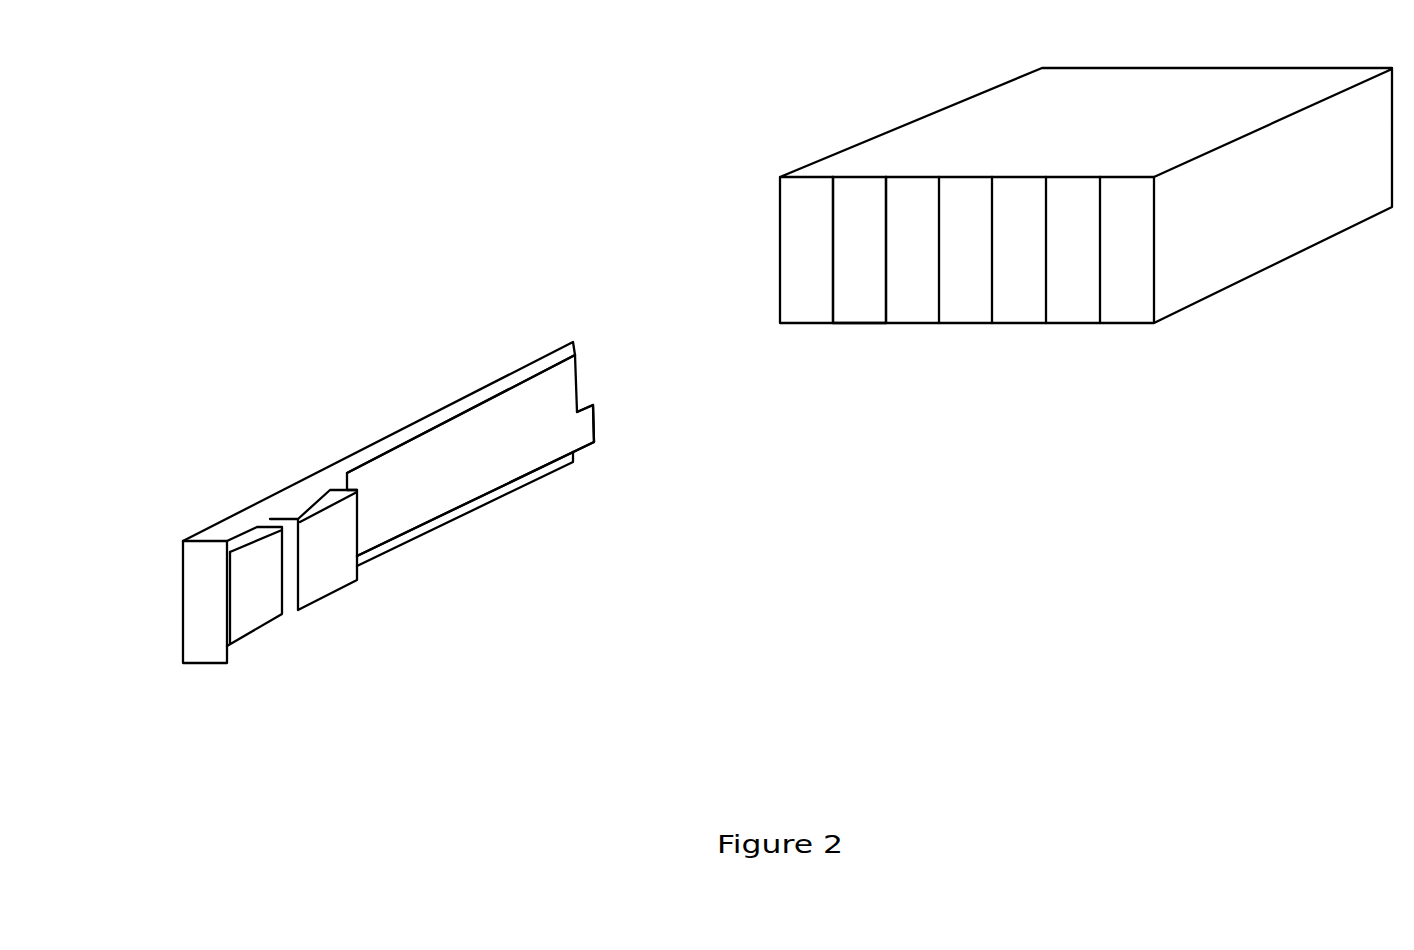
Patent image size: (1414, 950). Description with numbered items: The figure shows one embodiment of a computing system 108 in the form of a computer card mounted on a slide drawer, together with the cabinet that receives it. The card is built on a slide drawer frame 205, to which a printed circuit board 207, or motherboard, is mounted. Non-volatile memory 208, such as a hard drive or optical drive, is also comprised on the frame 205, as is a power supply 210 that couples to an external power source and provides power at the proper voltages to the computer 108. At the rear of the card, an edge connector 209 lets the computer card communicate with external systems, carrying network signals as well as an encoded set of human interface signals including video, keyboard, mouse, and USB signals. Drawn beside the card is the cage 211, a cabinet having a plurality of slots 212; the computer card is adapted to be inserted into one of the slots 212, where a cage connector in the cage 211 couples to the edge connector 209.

The computing system 108 is at (205, 673).
The slide drawer frame 205 is at (298, 482).
The printed circuit board 207 is at (445, 489).
The non-volatile memory 208 is at (313, 555).
The edge connector 209 is at (598, 422).
The power supply 210 is at (247, 610).
The cage 211 is at (808, 163).
The slots 212 is at (858, 317).